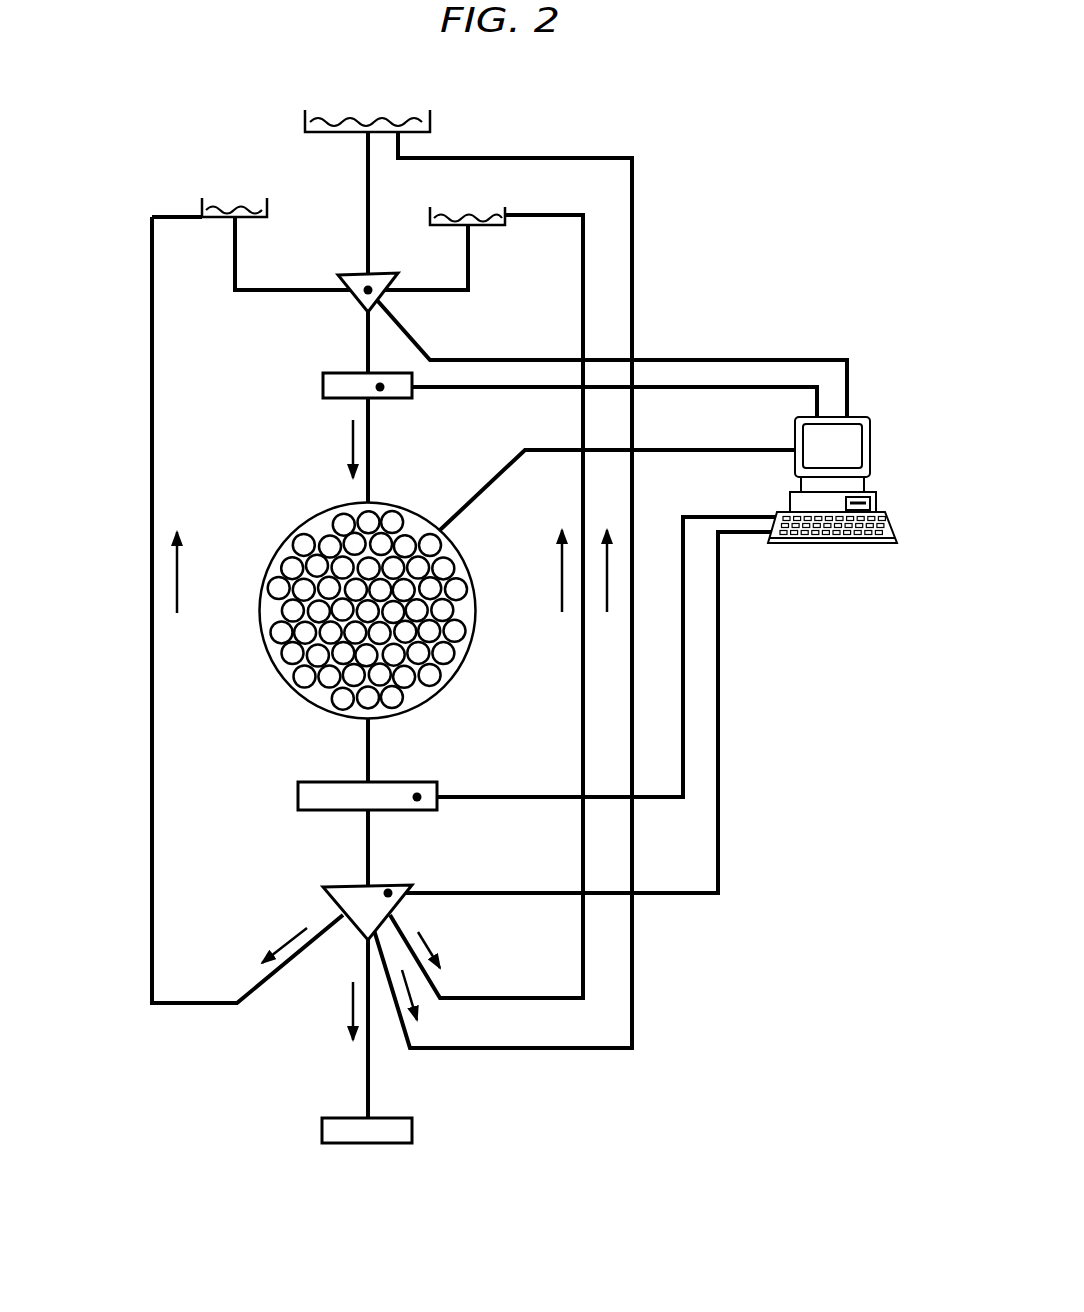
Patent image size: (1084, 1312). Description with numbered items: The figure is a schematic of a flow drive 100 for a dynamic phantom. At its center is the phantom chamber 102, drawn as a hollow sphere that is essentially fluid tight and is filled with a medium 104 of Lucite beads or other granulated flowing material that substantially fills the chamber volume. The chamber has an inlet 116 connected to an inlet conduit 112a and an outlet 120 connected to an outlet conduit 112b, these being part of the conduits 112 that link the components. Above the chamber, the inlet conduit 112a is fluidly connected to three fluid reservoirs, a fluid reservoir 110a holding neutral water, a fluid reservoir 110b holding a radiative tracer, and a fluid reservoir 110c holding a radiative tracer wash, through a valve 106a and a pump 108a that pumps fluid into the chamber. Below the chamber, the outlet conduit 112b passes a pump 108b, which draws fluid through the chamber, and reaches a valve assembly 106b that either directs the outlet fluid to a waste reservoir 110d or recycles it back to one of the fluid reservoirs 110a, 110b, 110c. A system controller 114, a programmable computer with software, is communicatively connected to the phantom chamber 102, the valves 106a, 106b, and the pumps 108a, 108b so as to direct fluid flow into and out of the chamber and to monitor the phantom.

The flow drive 100 is at (172, 1158).
The phantom chamber 102 is at (478, 600).
The medium 104 is at (266, 598).
The valve 106a is at (352, 276).
The valve assembly 106b is at (340, 886).
The pump 108a is at (322, 388).
The pump 108b is at (298, 798).
The fluid reservoir 110a is at (202, 214).
The fluid reservoir 110b is at (432, 126).
The fluid reservoir 110c is at (490, 212).
The waste reservoir 110d is at (322, 1132).
The conduits 112 is at (152, 738).
The inlet conduit 112a is at (366, 346).
The outlet conduit 112b is at (366, 752).
The system controller 114 is at (872, 447).
The inlet 116 is at (372, 498).
The outlet 120 is at (372, 722).